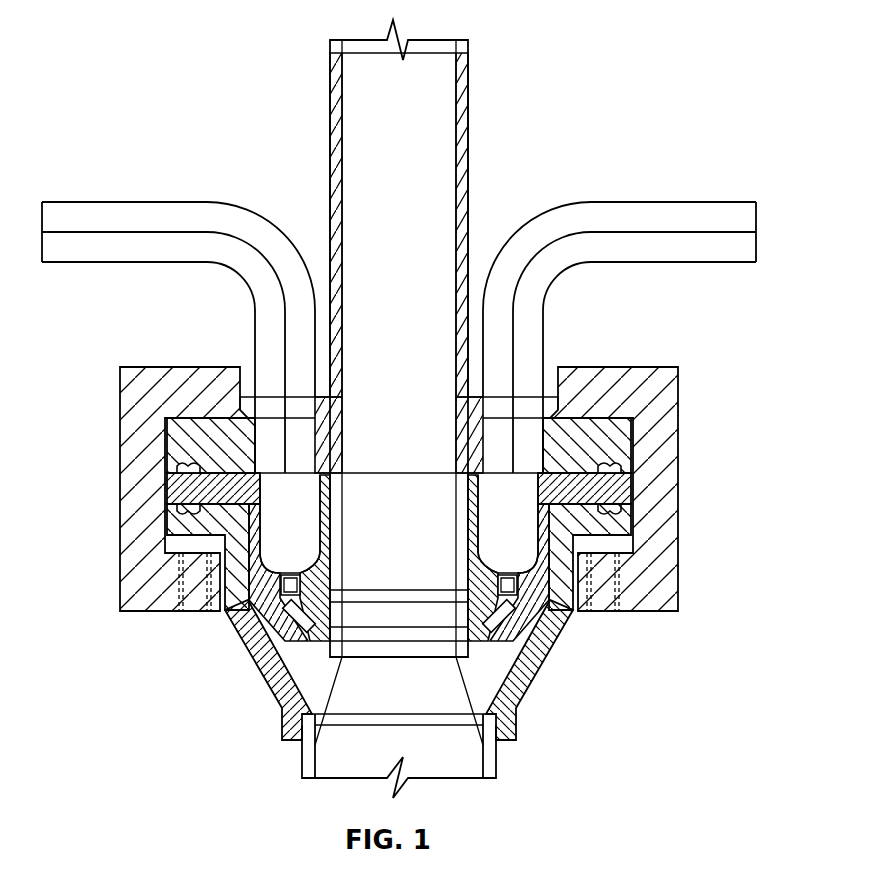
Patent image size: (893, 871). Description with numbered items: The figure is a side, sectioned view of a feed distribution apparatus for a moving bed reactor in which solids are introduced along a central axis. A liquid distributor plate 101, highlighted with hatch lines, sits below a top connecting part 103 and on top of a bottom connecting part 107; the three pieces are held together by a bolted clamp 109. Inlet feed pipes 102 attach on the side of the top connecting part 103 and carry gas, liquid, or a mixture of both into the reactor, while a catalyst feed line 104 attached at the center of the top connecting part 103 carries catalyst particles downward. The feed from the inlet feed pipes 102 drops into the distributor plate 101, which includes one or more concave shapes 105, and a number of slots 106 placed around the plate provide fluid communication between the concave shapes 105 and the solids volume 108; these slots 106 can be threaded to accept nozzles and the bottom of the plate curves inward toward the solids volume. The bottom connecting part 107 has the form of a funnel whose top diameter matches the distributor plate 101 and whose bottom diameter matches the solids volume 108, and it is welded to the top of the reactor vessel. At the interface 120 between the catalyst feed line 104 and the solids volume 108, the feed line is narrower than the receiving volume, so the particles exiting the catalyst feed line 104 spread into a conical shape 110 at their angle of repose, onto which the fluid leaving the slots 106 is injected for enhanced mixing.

The liquid distributor plate 101 is at (167, 512).
The inlet feed pipes 102 is at (153, 202).
The top connecting part 103 is at (167, 442).
The catalyst feed line 104 is at (468, 127).
The concave shapes 105 is at (522, 562).
The slots 106 is at (289, 618).
The bottom connecting part 107 is at (268, 668).
The solids volume 108 is at (302, 758).
The bolted clamp 109 is at (120, 383).
The conical shape 110 is at (500, 706).
The interface 120 is at (455, 679).